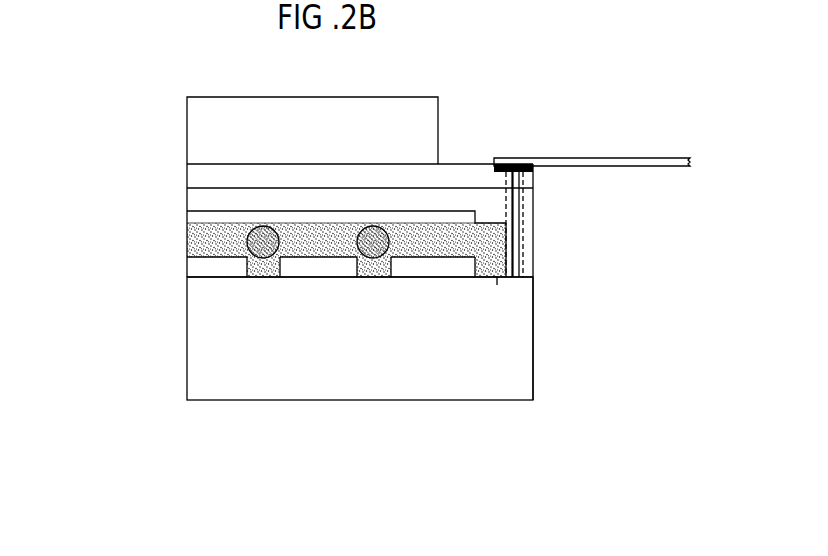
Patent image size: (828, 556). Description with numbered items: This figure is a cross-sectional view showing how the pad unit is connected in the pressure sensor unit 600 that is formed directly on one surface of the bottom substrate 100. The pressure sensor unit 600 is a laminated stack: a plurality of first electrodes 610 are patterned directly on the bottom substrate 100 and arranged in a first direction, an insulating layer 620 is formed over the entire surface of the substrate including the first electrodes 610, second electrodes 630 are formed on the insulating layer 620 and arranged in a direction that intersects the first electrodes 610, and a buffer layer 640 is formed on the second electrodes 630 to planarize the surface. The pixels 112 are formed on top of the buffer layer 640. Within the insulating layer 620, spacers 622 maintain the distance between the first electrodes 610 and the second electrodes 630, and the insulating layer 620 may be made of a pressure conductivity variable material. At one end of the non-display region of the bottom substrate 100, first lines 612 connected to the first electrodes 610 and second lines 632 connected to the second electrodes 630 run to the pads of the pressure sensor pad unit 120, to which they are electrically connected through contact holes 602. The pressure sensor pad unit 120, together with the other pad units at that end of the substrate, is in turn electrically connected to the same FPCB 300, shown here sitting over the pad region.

The bottom substrate 100 is at (187, 330).
The pixels 112 is at (187, 130).
The pressure sensor pad unit 120 is at (513, 165).
The FPCB 300 is at (651, 158).
The pressure sensor unit 600 is at (105, 165).
The contact holes 602 is at (520, 240).
The first electrodes 610 is at (187, 266).
The first lines 612 is at (497, 277).
The insulating layer 620 is at (187, 238).
The spacers 622 is at (263, 256).
The second electrodes 630 is at (187, 201).
The second lines 632 is at (512, 204).
The buffer layer 640 is at (187, 175).